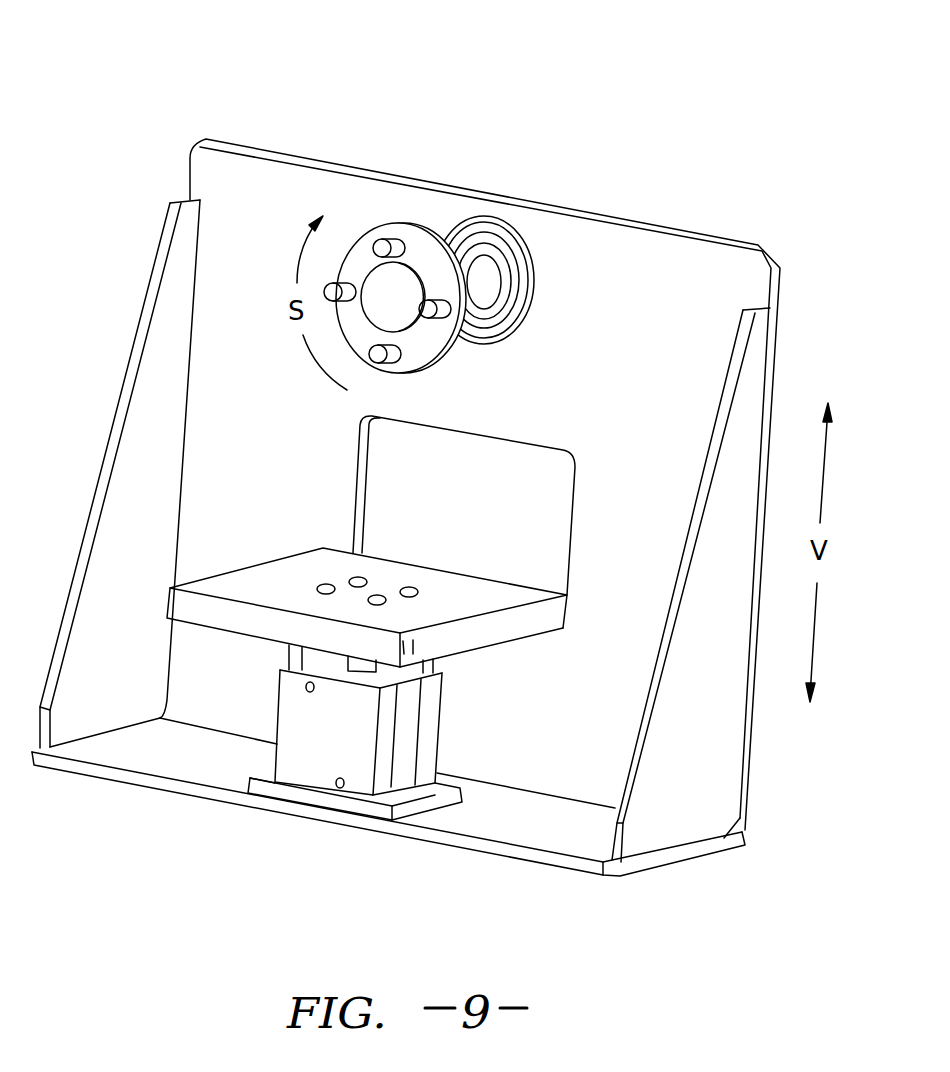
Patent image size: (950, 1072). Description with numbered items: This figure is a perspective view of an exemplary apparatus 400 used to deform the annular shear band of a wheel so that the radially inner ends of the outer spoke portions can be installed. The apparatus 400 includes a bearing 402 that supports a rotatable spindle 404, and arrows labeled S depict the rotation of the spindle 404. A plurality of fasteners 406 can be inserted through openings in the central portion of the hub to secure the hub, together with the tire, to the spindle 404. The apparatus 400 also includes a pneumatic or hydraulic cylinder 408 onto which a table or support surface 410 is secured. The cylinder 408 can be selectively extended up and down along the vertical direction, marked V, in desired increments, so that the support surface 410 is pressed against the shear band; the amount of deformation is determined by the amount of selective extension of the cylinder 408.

The apparatus 400 is at (130, 107).
The bearing 402 is at (504, 256).
The rotatable spindle 404 is at (483, 280).
The fasteners 406 is at (370, 243).
The pneumatic or hydraulic cylinder 408 is at (293, 750).
The support surface 410 is at (493, 630).